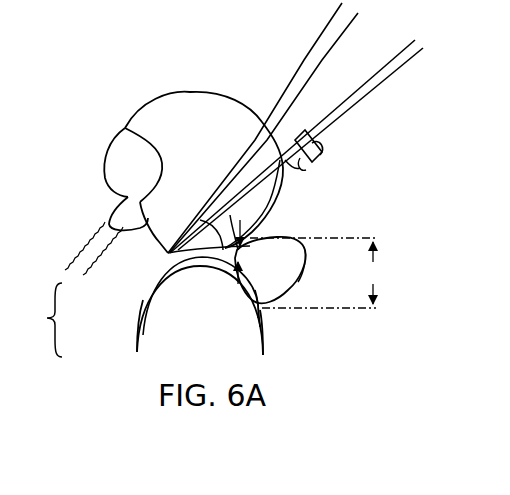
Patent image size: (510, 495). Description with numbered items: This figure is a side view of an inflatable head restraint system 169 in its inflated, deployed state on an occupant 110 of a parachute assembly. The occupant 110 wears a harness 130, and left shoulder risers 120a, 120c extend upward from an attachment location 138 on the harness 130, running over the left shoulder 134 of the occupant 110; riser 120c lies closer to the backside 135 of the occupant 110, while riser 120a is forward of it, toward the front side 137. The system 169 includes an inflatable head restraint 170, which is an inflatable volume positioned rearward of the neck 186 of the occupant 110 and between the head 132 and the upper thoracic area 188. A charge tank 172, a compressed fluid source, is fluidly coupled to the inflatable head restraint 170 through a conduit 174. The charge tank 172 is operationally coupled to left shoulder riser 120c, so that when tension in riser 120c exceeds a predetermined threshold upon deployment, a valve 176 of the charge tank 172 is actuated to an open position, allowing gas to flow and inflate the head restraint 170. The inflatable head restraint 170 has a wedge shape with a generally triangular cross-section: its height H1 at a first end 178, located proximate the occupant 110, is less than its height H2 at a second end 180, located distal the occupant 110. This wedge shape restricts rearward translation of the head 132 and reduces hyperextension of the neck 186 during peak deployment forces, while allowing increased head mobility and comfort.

The occupant 110 is at (100, 103).
The left shoulder riser 120a is at (300, 78).
The left shoulder riser 120c is at (402, 58).
The harness 130 is at (258, 316).
The head 132 is at (200, 144).
The left shoulder 134 is at (207, 329).
The backside 135 is at (260, 350).
The front side 137 is at (137, 341).
The attachment location 138 is at (150, 268).
The inflatable head restraint system 169 is at (378, 176).
The inflatable head restraint 170 is at (285, 274).
The charge tank 172 is at (324, 152).
The conduit 174 is at (283, 183).
The valve 176 is at (285, 166).
The first end 178 is at (216, 234).
The second end 180 is at (304, 268).
The neck 186 is at (216, 264).
The upper thoracic area 188 is at (47, 318).
The height H1 is at (238, 268).
The height H2 is at (316, 273).